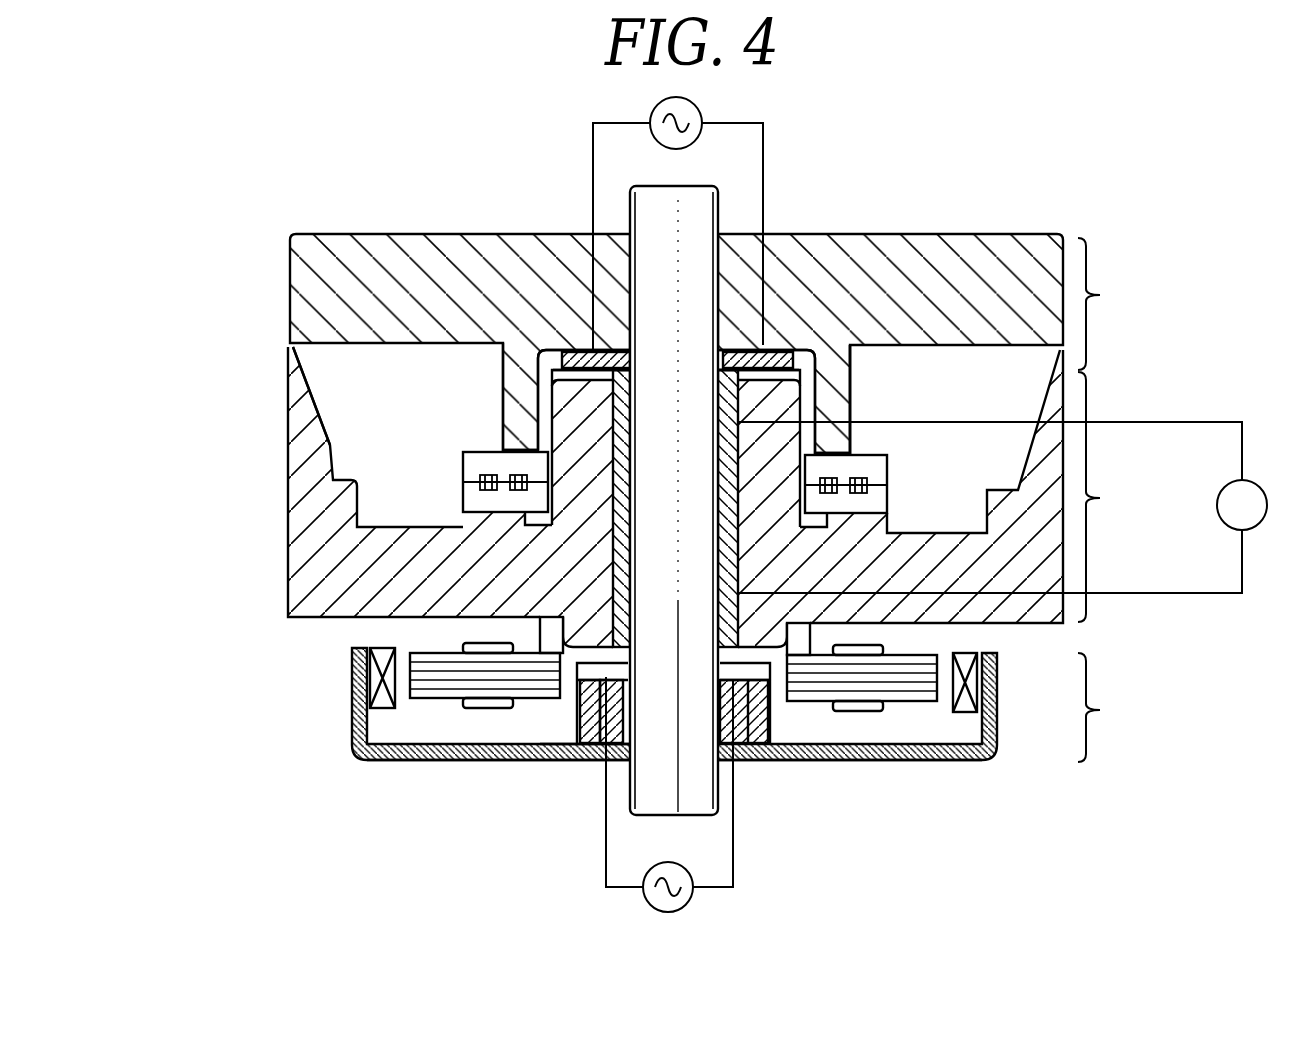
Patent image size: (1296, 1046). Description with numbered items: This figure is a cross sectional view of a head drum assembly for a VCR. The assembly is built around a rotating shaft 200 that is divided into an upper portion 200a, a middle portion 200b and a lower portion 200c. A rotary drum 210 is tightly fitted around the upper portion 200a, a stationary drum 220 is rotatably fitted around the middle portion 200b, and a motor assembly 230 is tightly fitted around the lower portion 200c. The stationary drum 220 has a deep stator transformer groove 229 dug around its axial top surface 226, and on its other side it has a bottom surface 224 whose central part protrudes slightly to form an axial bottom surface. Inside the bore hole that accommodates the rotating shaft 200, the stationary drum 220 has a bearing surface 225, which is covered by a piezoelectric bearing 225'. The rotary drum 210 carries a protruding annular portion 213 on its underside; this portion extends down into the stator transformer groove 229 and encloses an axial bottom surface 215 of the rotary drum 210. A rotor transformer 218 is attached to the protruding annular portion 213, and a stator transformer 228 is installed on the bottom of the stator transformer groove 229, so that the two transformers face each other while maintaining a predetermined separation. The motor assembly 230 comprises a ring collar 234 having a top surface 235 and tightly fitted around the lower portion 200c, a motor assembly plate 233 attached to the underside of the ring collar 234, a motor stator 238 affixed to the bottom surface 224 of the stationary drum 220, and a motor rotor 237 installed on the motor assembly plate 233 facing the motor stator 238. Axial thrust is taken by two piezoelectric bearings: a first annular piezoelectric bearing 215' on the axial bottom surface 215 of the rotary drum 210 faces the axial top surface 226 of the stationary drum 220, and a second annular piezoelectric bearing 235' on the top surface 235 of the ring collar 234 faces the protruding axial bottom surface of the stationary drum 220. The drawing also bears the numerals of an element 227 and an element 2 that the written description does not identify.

The detection circuit 2 is at (1002, 507).
The rotating shaft 200 is at (647, 212).
The upper portion 200a is at (1135, 304).
The middle portion 200b is at (1135, 497).
The lower portion 200c is at (1134, 707).
The rotary drum 210 is at (300, 299).
The protruding annular portion 213 is at (518, 418).
The axial bottom surface 215 is at (713, 262).
The first annular piezoelectric bearing 215' is at (751, 250).
The rotor transformer 218 is at (480, 465).
The stationary drum 220 is at (300, 516).
The bottom surface 224 is at (420, 617).
The bearing surface 225 is at (769, 513).
The piezoelectric bearing 225' is at (779, 499).
The axial top surface 226 is at (803, 357).
The electrode 227 is at (748, 678).
The stator transformer 228 is at (478, 495).
The stator transformer groove 229 is at (315, 396).
The motor assembly 230 is at (345, 683).
The motor assembly plate 233 is at (367, 758).
The ring collar 234 is at (560, 758).
The top surface 235 is at (544, 740).
The second annular piezoelectric bearing 235' is at (575, 763).
The motor rotor 237 is at (380, 657).
The motor stator 238 is at (430, 686).